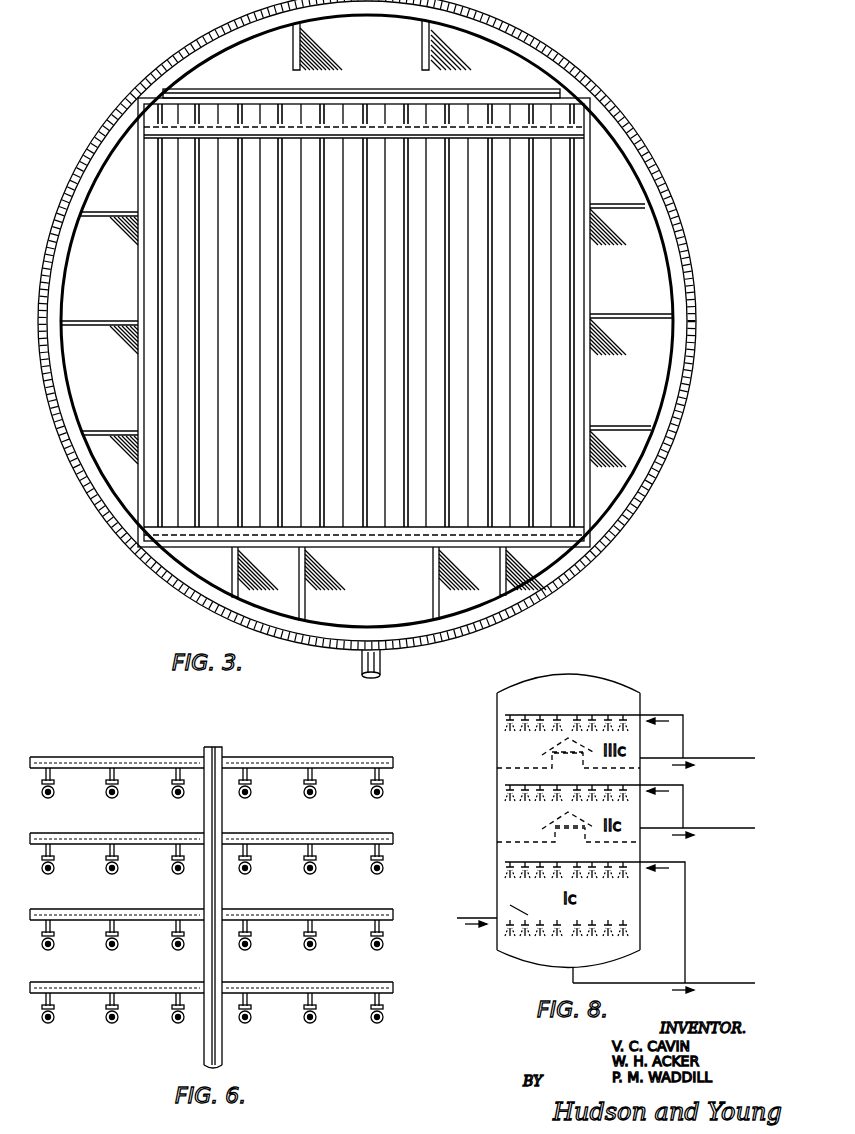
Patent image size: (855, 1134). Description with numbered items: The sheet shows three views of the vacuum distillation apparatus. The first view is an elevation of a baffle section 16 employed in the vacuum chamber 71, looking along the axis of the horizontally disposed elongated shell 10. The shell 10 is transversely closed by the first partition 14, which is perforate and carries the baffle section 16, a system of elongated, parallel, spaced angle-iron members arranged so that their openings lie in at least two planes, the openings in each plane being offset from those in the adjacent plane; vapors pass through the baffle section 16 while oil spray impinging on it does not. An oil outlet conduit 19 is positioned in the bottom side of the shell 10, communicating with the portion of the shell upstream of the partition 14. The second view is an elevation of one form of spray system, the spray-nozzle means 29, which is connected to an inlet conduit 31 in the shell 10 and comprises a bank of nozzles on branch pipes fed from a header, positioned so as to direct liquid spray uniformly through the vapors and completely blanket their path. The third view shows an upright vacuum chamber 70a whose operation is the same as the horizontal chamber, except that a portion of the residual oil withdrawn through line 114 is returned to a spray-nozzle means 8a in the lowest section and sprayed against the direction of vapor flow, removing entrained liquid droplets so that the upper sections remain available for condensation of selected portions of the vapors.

In FIG. 3, the shell 10 is at (646, 151).
In FIG. 3, the vacuum chamber 71 is at (555, 47).
In FIG. 3, the first partition 14 is at (652, 288).
In FIG. 3, the baffle section 16 is at (590, 188).
In FIG. 3, the oil outlet conduit 19 is at (382, 664).
In FIG. 6, the spray-nozzle means 29 is at (354, 824).
In FIG. 6, the inlet conduit 31 is at (222, 1060).
In FIG. 8, the upright vacuum chamber 70a is at (640, 703).
In FIG. 8, the spray-nozzle means 8a is at (630, 872).
In FIG. 8, the line 114 is at (703, 983).